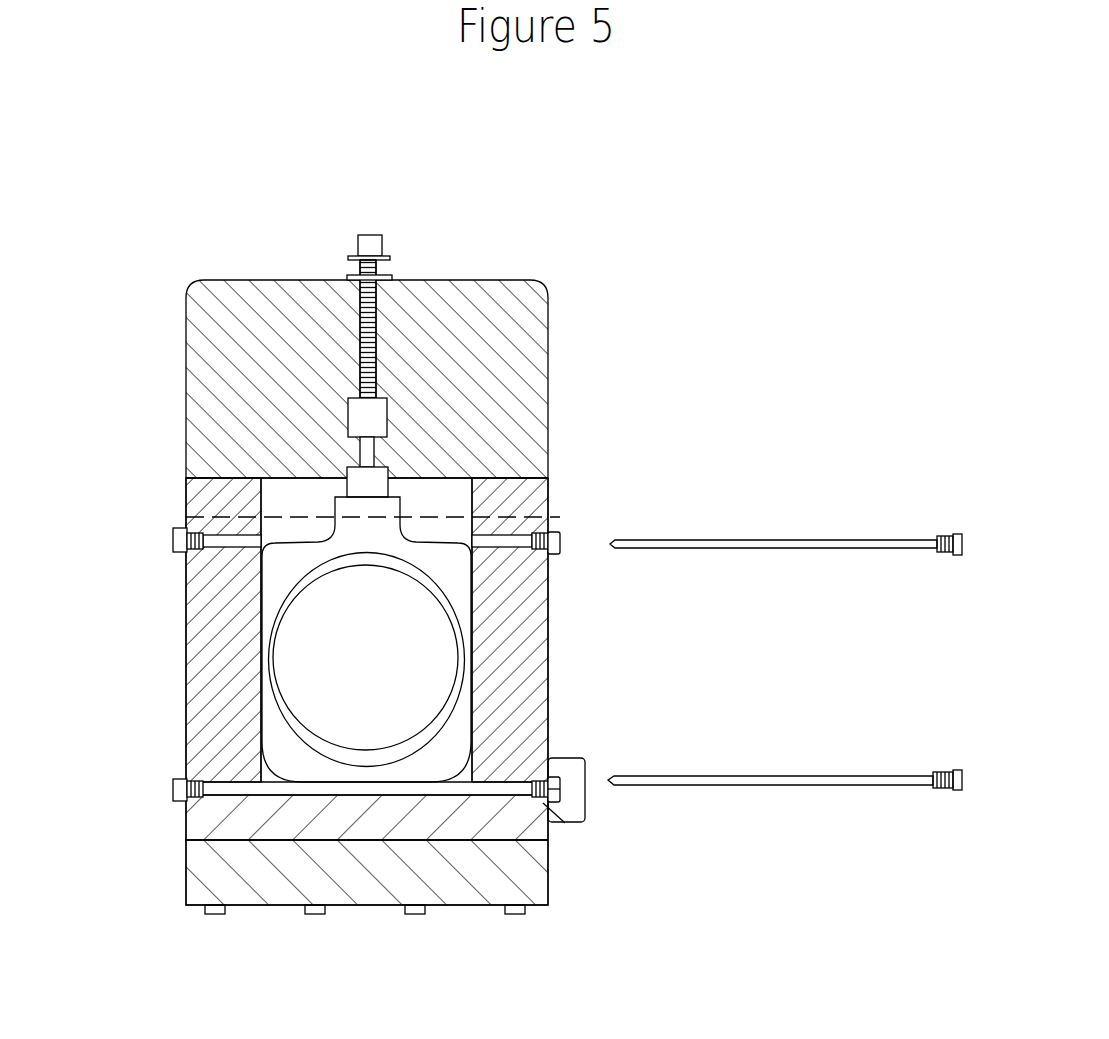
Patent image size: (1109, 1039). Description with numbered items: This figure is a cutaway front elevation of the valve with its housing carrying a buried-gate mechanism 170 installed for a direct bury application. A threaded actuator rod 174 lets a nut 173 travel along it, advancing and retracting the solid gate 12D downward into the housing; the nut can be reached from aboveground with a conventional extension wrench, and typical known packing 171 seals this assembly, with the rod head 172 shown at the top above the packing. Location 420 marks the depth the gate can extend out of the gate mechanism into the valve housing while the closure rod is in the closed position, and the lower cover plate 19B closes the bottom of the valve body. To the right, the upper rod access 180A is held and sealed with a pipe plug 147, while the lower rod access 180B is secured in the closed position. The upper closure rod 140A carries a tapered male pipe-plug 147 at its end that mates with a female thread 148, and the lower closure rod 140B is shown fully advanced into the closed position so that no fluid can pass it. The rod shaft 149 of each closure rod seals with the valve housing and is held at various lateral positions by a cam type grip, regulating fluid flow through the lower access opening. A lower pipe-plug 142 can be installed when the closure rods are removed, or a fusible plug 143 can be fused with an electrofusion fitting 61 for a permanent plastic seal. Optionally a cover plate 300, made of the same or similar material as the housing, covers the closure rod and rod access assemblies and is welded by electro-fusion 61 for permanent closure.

The buried-gate mechanism 170 is at (527, 450).
The packing 171 is at (381, 277).
The bolt head 172 is at (369, 242).
The nut 173 is at (374, 417).
The threaded actuator rod 174 is at (376, 352).
The gate extension depth location 420 is at (187, 520).
The solid gate 12D is at (298, 662).
The lower cover plate 19B is at (203, 873).
The female thread 148 is at (560, 530).
The upper pipe plug 147 is at (567, 545).
The upper access port 180A is at (549, 556).
The rod shaft 149 is at (792, 540).
The upper closure rod 140A is at (892, 540).
The lower pipe plug 142 is at (553, 775).
The cover plate 300 is at (578, 773).
The fusible plug 143 is at (560, 790).
The lower access port 180B is at (553, 807).
The electrofusion fitting 61 is at (547, 823).
The lower closure rod 140B is at (885, 786).